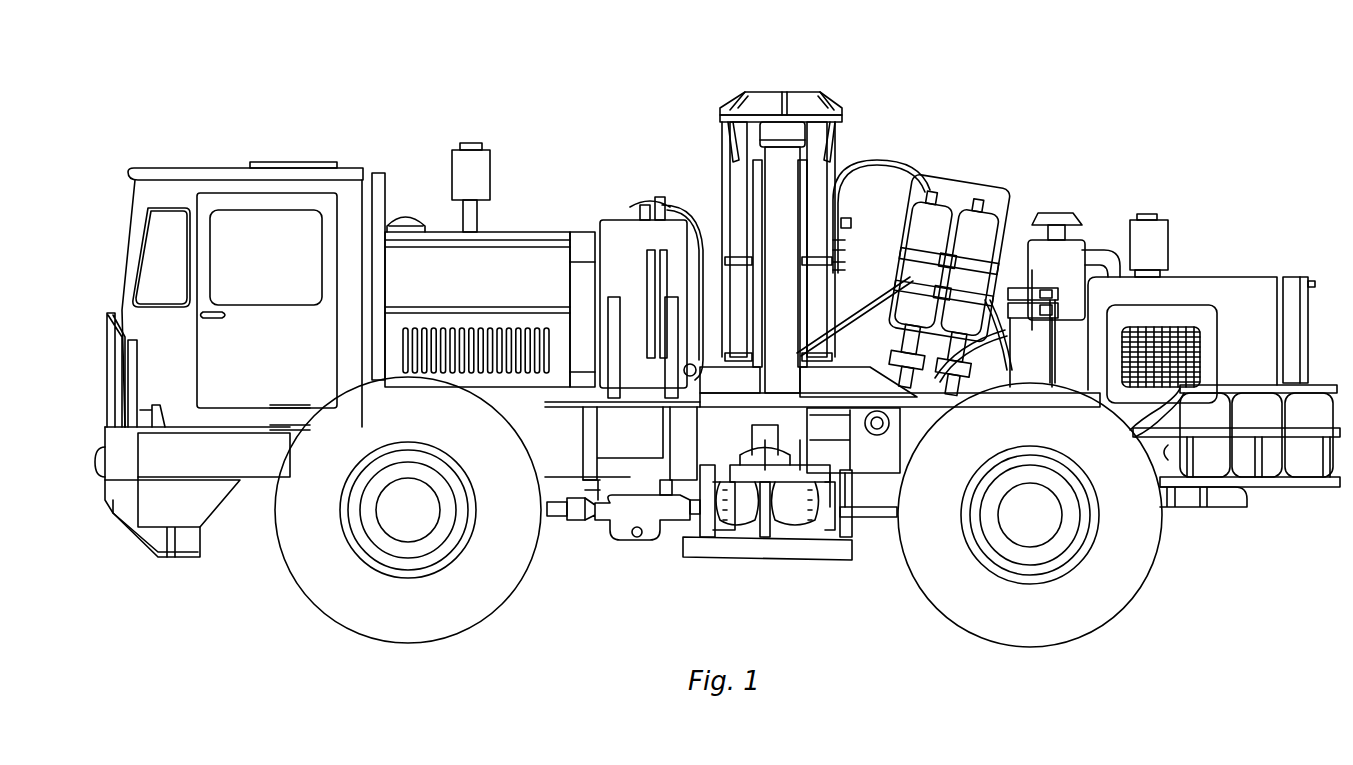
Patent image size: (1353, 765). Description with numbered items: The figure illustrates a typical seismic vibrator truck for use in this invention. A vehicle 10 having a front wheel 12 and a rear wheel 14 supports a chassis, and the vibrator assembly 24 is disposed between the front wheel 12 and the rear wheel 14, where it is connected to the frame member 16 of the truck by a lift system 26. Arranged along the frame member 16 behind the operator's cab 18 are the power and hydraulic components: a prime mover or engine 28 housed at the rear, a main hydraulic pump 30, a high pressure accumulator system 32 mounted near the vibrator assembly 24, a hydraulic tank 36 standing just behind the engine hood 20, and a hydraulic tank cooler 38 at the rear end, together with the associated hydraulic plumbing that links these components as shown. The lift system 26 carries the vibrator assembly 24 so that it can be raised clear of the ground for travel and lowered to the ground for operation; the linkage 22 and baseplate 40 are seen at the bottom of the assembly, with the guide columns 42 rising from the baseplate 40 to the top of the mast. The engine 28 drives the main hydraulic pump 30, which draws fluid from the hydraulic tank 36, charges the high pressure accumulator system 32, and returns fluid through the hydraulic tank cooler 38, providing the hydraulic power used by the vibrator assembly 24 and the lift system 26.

The vehicle 10 is at (268, 111).
The front wheel 12 is at (277, 520).
The rear wheel 14 is at (1153, 547).
The frame member 16 is at (553, 470).
The operator cab 18 is at (204, 168).
The engine hood 20 is at (437, 252).
The linkage 22 is at (863, 515).
The vibrator assembly 24 is at (788, 80).
The lift system 26 is at (795, 170).
The engine 28 is at (1220, 278).
The main hydraulic pump 30 is at (1035, 365).
The high pressure accumulator system 32 is at (985, 225).
The hydraulic tank 36 is at (597, 228).
The hydraulic tank cooler 38 is at (1300, 280).
The baseplate 40 is at (808, 555).
The mast guide columns 42 is at (737, 162).